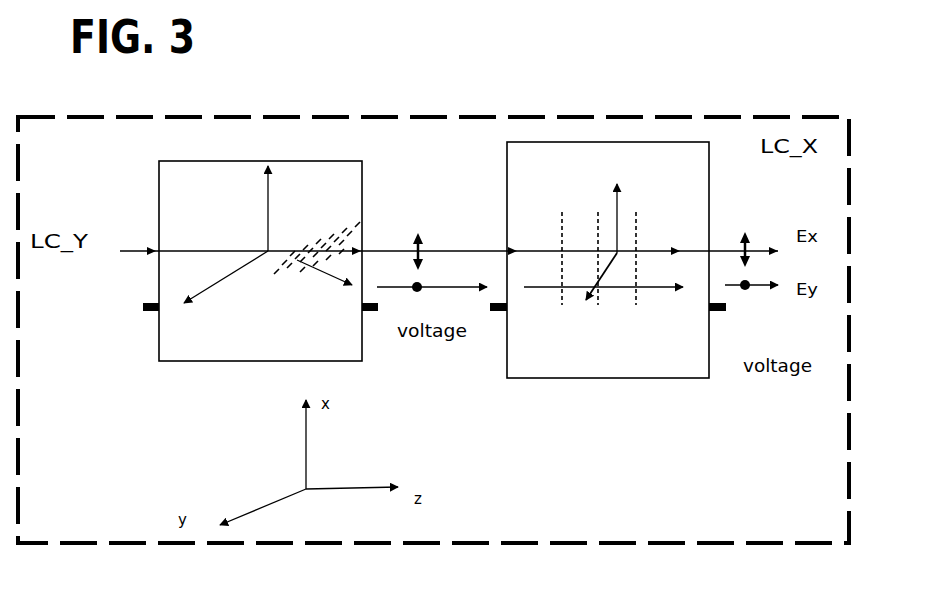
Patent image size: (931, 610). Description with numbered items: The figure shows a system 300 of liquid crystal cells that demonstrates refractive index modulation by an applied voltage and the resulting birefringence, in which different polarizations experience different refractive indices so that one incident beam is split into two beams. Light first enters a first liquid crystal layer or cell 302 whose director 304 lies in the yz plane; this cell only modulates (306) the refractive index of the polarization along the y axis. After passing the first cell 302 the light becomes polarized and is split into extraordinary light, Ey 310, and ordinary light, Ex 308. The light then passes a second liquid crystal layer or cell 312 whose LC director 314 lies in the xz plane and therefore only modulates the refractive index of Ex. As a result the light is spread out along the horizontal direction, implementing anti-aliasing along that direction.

The system 300 is at (148, 113).
The liquid crystal layer or cell (LC_Y) 302 is at (160, 200).
The director 304 is at (313, 242).
The modulation of refractive index 306 is at (337, 286).
The Ex (ordinary light) 308 is at (385, 252).
The Ey (extraordinary light) 310 is at (456, 289).
The liquid crystal layer or cell (LC_X) 312 is at (605, 378).
The LC director 314 is at (562, 220).